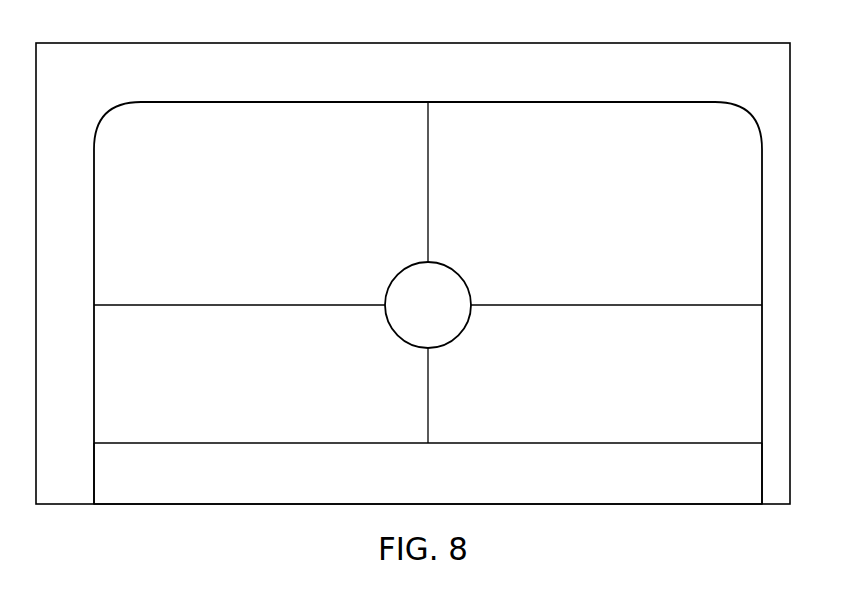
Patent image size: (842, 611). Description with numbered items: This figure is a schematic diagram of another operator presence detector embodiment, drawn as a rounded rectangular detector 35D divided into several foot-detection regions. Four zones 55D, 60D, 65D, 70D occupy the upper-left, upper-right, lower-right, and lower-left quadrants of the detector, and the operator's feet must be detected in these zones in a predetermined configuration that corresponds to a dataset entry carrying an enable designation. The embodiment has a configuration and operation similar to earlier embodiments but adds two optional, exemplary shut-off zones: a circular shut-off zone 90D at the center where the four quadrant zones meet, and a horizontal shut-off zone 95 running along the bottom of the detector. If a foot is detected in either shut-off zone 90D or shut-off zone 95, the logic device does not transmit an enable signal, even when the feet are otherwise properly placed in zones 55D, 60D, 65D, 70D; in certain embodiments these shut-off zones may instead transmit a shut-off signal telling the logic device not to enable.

The display screen 35D is at (270, 158).
The zone 55D is at (262, 214).
The zone 60D is at (614, 214).
The zone 65D is at (614, 388).
The zone 70D is at (262, 388).
The shut-off zone 90D is at (413, 315).
The shut-off zone 95 is at (416, 486).